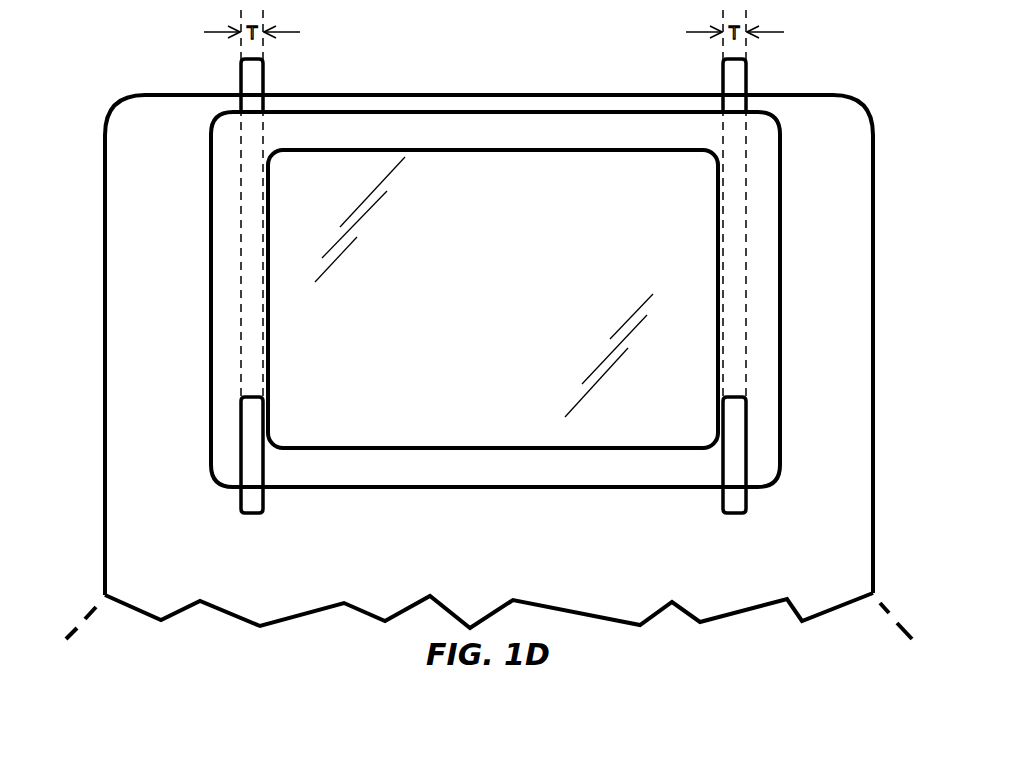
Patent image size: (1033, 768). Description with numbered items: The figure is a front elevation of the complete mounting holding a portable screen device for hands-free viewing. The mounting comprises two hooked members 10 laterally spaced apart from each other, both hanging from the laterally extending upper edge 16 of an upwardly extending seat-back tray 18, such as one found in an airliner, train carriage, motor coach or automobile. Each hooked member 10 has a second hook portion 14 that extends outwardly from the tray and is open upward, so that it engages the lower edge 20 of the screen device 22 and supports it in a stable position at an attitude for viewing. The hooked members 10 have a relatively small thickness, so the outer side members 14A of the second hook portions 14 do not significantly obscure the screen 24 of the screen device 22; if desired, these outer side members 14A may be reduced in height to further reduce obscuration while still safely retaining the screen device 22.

The hooked member 10 is at (272, 70).
The second hook portion 14 is at (239, 418).
The outer side member 14A is at (253, 463).
The upper edge 16 is at (423, 95).
The seat-back tray 18 is at (167, 303).
The lower edge 20 is at (415, 488).
The screen device 22 is at (521, 489).
The screen 24 is at (504, 304).